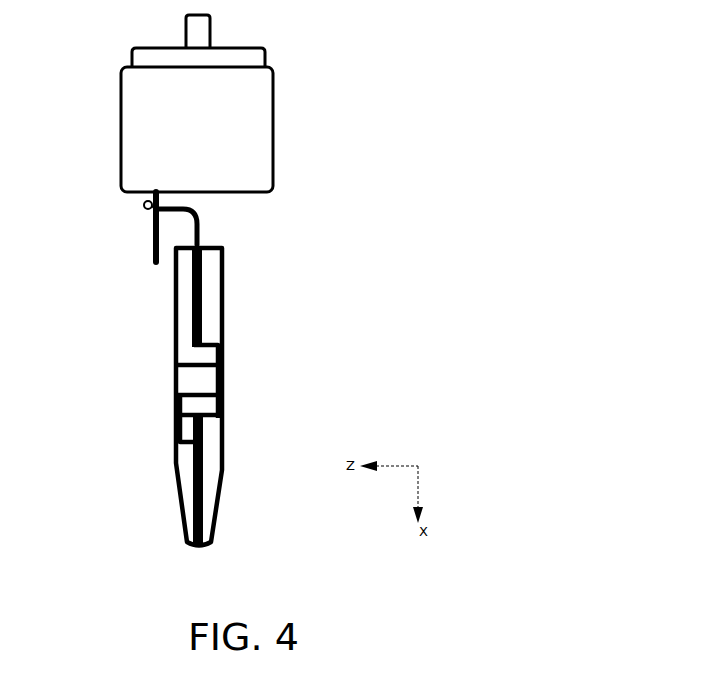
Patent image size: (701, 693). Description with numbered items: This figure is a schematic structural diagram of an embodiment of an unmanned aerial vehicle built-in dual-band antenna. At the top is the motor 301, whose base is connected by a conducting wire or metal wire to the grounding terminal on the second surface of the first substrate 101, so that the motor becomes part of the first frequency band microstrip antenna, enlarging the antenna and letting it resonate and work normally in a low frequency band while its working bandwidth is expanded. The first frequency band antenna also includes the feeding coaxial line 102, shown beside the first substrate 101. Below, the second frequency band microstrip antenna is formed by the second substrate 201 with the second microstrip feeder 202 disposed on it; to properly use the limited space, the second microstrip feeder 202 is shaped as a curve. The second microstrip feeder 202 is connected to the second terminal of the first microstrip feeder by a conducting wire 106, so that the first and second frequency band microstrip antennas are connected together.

The motor 301 is at (230, 123).
The first substrate 101 is at (153, 243).
The feeding coaxial line 102 is at (146, 210).
The conducting wire 106 is at (182, 218).
The second substrate 201 is at (224, 378).
The second microstrip feeder 202 is at (205, 316).